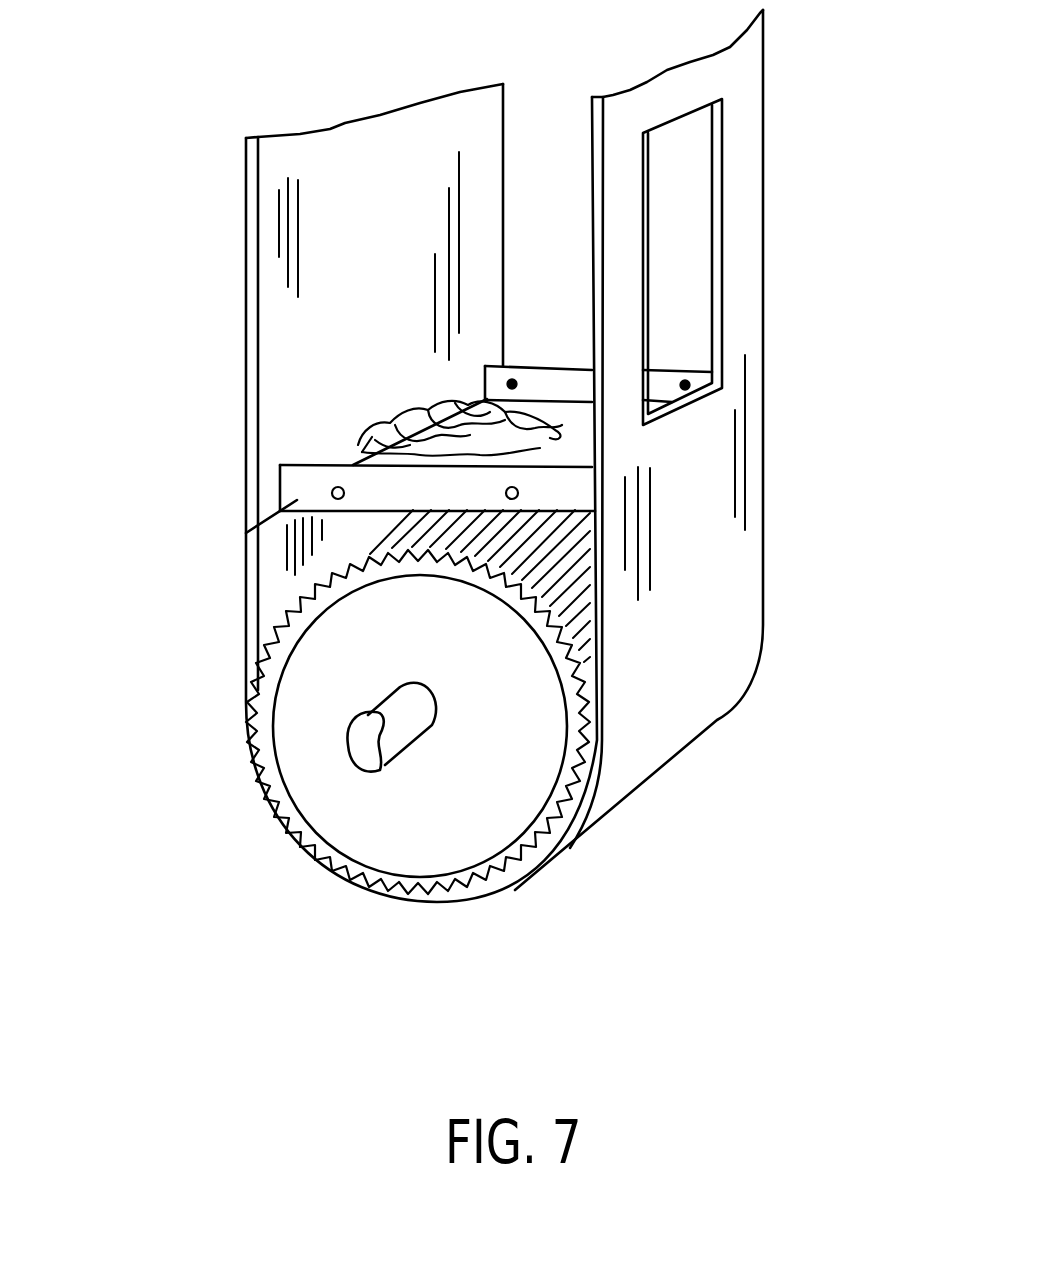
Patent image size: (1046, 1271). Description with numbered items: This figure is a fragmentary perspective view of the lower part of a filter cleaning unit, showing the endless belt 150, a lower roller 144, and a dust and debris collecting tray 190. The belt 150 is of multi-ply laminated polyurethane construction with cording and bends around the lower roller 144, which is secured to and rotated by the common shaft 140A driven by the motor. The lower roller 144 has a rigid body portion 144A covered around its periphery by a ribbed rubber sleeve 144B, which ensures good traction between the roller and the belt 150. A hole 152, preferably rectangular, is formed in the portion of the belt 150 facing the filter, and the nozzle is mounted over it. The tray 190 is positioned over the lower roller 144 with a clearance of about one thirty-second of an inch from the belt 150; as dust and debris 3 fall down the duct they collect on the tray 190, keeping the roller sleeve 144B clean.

The dust and debris 3 is at (432, 420).
The common shaft 140A is at (372, 710).
The lower roller 144 is at (358, 885).
The rigid body portion 144A is at (488, 830).
The ribbed rubber sleeve 144B is at (270, 790).
The endless belt 150 is at (245, 285).
The hole 152 is at (718, 263).
The tray 190 is at (295, 502).